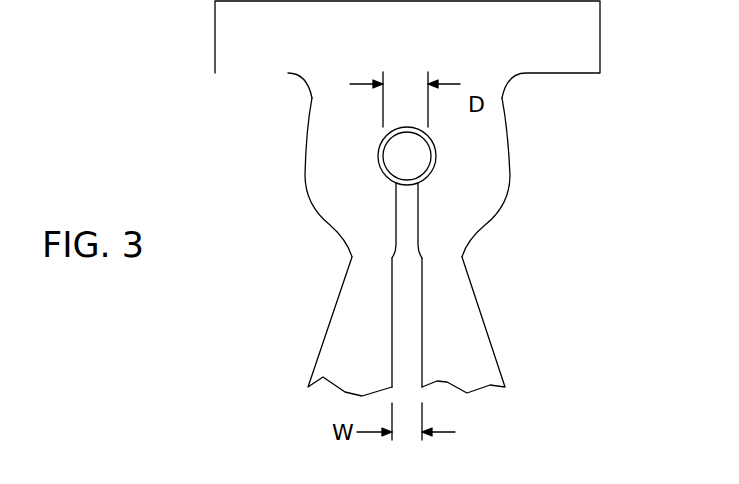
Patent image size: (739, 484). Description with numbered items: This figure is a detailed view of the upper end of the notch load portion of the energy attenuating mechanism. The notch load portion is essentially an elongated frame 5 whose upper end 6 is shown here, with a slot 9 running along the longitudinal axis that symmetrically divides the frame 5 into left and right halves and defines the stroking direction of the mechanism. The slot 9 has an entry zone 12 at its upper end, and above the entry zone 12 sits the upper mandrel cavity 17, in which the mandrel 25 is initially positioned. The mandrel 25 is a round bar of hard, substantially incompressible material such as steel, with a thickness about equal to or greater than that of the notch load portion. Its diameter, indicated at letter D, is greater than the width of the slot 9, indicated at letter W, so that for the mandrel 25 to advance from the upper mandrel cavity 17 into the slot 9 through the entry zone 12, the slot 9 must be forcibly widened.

The elongated frame 5 is at (327, 327).
The upper end 6 is at (305, 180).
The slot 9 is at (412, 352).
The entry zone 12 is at (418, 210).
The upper mandrel cavity 17 is at (378, 158).
The mandrel 25 is at (436, 160).